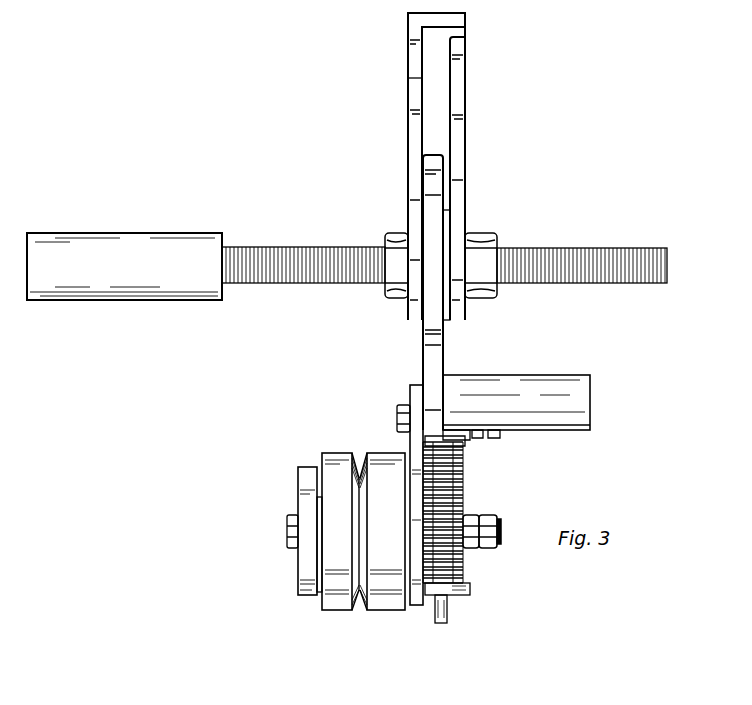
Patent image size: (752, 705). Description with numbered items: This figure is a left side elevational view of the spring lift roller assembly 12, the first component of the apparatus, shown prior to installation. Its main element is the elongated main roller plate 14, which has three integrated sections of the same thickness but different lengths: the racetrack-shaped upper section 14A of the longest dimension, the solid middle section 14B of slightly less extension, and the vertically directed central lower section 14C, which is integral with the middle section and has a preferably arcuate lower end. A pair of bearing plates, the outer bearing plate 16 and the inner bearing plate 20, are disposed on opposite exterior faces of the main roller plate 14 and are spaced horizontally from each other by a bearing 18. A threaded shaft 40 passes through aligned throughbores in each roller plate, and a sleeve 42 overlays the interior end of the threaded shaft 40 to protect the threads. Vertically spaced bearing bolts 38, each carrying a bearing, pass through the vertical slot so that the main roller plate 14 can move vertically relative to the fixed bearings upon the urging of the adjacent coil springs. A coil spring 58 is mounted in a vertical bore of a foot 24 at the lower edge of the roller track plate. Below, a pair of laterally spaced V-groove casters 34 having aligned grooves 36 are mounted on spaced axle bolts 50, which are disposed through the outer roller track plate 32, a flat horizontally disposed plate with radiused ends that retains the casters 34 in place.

The spring lift roller assembly 12 is at (337, 120).
The inner bearing plate 20 is at (407, 62).
The outer bearing plate 16 is at (467, 80).
The main roller plate 14 is at (436, 154).
The upper section 14A is at (432, 232).
The middle section 14B is at (431, 368).
The lower section 14C is at (415, 460).
The bearing 18 is at (452, 218).
The threaded shaft 40 is at (577, 248).
The sleeve 42 is at (112, 282).
The bearing bolt 38 is at (397, 420).
The coil spring 58 is at (463, 490).
The foot 24 is at (460, 592).
The outer roller track plate 32 is at (298, 497).
The axle bolt 50 is at (287, 530).
The V-groove caster 34 is at (388, 606).
The groove 36 is at (362, 600).